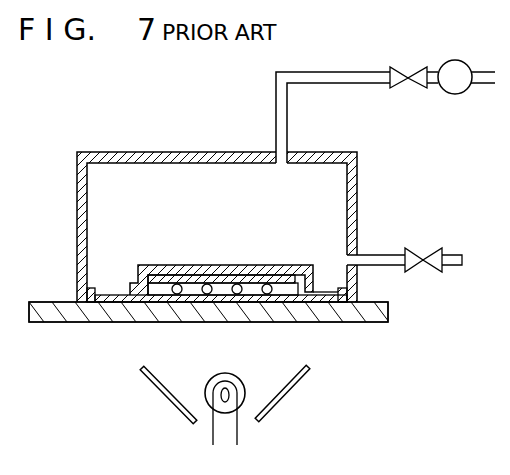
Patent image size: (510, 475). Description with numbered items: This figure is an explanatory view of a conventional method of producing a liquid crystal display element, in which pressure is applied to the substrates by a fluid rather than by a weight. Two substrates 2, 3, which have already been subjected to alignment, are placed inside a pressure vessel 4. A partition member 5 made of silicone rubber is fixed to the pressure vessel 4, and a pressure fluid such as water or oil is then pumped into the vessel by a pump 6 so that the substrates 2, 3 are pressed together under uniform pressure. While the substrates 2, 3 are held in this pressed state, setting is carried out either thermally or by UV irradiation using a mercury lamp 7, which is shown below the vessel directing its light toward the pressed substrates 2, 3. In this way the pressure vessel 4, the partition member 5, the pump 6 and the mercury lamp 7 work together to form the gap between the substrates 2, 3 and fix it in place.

The substrate 2 is at (287, 280).
The substrate 3 is at (278, 303).
The pressure vessel 4 is at (358, 176).
The partition member 5 is at (327, 300).
The pump 6 is at (462, 93).
The mercury lamp 7 is at (240, 408).